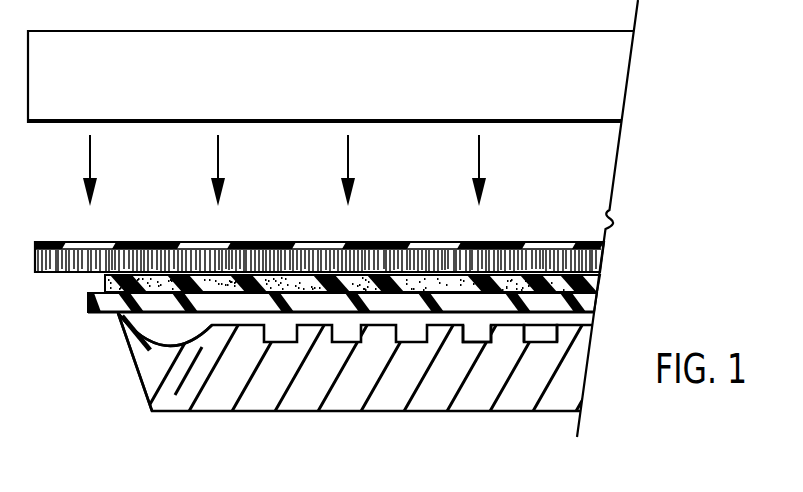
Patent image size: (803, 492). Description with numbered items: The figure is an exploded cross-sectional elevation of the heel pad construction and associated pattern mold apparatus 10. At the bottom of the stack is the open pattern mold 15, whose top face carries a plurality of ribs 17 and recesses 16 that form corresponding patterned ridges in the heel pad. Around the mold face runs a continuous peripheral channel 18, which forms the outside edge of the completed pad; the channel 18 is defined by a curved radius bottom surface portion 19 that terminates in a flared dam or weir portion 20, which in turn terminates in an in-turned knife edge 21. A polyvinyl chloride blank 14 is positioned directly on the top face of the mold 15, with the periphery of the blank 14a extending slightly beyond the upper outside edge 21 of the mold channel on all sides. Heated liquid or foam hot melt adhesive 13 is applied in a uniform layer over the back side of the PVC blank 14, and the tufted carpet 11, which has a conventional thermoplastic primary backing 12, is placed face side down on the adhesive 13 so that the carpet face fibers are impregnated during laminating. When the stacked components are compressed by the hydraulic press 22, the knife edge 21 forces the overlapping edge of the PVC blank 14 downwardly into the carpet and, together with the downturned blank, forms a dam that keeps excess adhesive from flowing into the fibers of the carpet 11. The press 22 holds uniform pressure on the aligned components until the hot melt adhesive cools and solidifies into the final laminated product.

The heel pad construction and pattern mold apparatus 10 is at (684, 45).
The hydraulic press 22 is at (615, 108).
The tufted carpet 11 is at (601, 258).
The primary backing 12 is at (525, 227).
The hot melt adhesive 13 is at (393, 283).
The polyvinyl chloride blank 14 is at (588, 302).
The periphery of the blank 14a is at (90, 309).
The open pattern mold 15 is at (582, 400).
The recesses 16 is at (541, 337).
The ribs 17 is at (503, 328).
The continuous peripheral channel 18 is at (204, 328).
The curved radius bottom surface portion 19 is at (200, 344).
The flared dam or weir portion 20 is at (124, 319).
The in-turned knife edge 21 is at (119, 316).